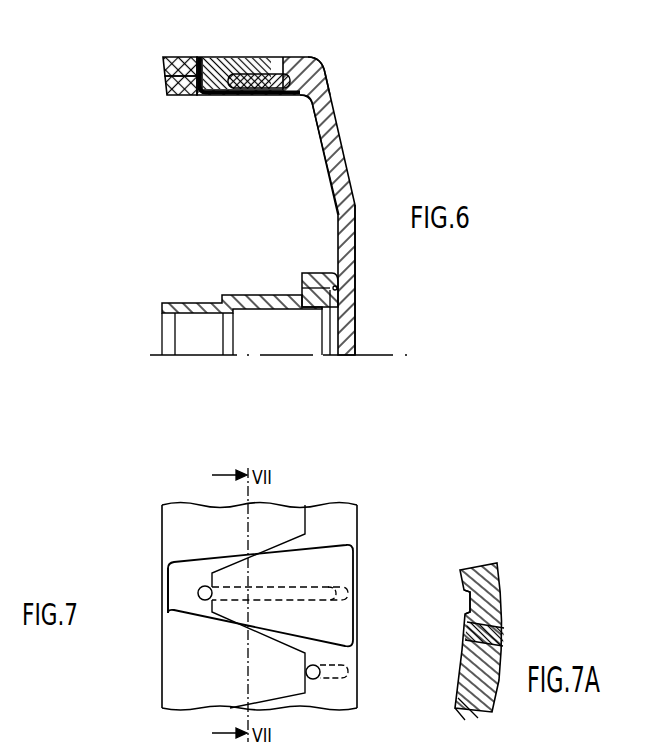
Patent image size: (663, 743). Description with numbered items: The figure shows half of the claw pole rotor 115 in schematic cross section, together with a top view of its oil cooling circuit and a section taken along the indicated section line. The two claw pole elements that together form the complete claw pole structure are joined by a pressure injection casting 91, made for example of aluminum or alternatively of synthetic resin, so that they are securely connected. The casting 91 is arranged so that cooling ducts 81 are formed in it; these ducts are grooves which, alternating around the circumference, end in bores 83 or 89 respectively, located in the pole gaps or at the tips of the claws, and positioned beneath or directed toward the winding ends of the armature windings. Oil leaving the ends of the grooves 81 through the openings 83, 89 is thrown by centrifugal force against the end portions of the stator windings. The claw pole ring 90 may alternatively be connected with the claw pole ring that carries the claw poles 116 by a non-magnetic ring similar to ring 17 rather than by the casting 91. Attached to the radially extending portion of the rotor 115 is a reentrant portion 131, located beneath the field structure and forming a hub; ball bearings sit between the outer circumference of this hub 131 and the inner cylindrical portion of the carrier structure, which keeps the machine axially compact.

In FIG. 6, the non-magnetic ring 17 is at (244, 69).
In FIG. 6, the cooling ducts 81 is at (276, 93).
In FIG. 7, the cooling ducts 81 is at (293, 603).
In FIG. 7A, the cooling ducts 81 is at (471, 598).
In FIG. 6, the opening (bore) 83 is at (317, 63).
In FIG. 7, the opening (bore) 83 is at (318, 663).
In FIG. 6, the opening (bore) 89 is at (168, 67).
In FIG. 7, the opening (bore) 89 is at (199, 597).
In FIG. 6, the claw pole ring 90 is at (168, 85).
In FIG. 7, the claw pole ring 90 is at (215, 650).
In FIG. 6, the pressure injection casting 91 is at (214, 76).
In FIG. 7A, the pressure injection casting 91 is at (503, 633).
In FIG. 6, the claw pole rotor 115 is at (386, 163).
In FIG. 6, the claw poles 116 is at (284, 59).
In FIG. 7, the claw poles 116 is at (337, 565).
In FIG. 6, the reentrant portion (hub) 131 is at (335, 300).